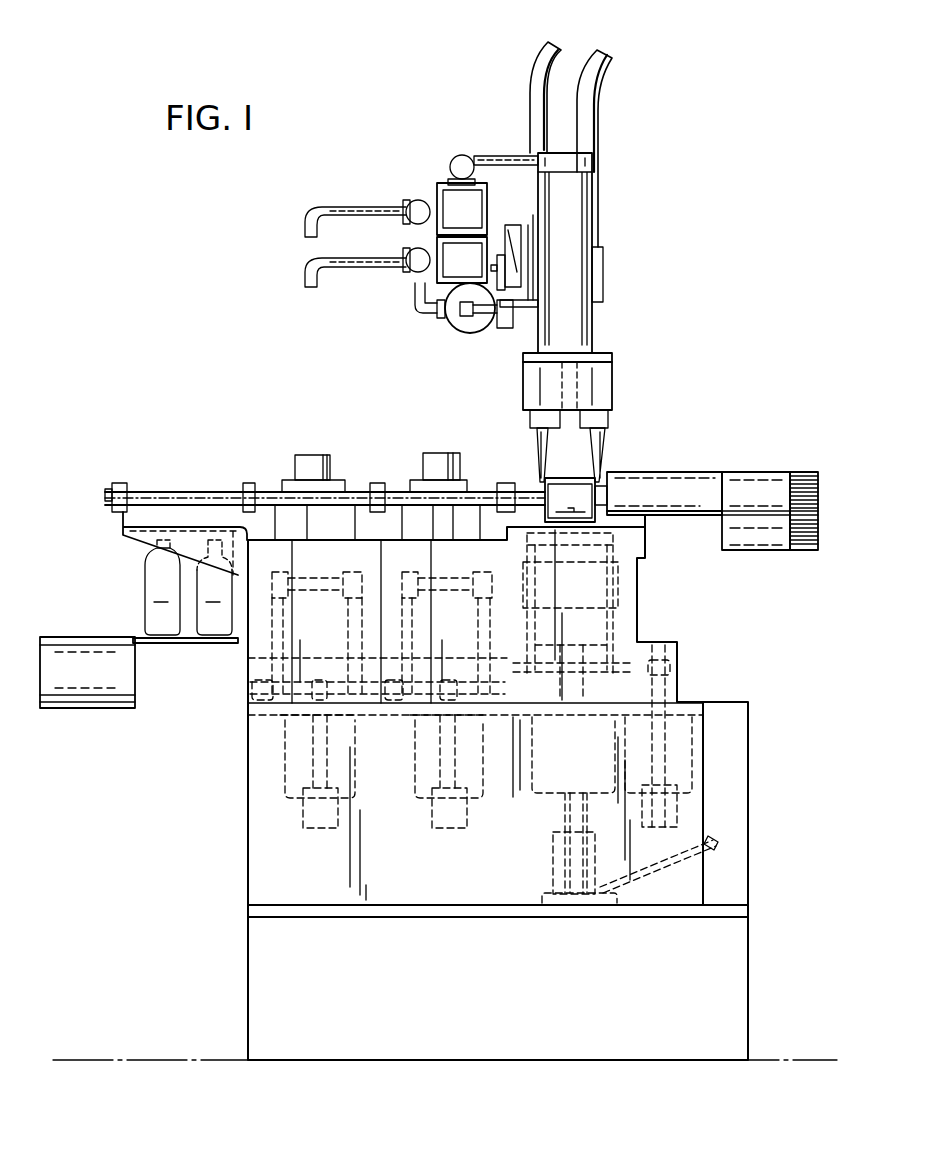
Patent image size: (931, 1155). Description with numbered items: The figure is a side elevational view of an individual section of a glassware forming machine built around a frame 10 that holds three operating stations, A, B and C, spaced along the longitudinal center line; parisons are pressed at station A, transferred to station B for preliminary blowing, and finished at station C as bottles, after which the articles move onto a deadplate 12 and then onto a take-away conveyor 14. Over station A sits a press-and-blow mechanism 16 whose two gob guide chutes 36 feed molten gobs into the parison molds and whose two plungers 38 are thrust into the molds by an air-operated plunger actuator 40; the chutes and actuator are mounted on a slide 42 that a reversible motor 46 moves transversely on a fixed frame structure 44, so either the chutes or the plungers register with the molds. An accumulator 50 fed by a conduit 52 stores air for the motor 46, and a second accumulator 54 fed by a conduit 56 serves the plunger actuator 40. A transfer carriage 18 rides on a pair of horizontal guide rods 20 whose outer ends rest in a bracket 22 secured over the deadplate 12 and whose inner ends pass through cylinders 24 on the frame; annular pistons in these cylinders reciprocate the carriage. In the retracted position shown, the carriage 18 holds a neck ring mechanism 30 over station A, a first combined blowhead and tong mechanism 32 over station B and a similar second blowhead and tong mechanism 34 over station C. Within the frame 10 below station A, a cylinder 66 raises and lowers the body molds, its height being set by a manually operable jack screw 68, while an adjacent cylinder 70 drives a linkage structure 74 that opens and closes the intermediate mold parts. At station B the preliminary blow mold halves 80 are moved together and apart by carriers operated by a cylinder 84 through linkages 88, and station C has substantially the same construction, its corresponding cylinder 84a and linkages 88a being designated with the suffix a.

The frame 10 is at (688, 702).
The deadplate 12 is at (175, 644).
The take-away conveyor 14 is at (98, 680).
The mechanism 16 is at (498, 148).
The carriage 18 is at (405, 420).
The guide rods 20 is at (152, 492).
The bracket 22 is at (134, 543).
The cylinders 24 is at (672, 504).
The neck ring mechanism 30 is at (566, 476).
The first combined blowhead and tong mechanism 32 is at (432, 443).
The second combined blowhead and tong mechanism 34 is at (283, 468).
The gob guide chutes 36 is at (612, 58).
The plungers 38 is at (540, 437).
The plunger actuator 40 is at (574, 220).
The slide 42 is at (603, 276).
The fixed frame structure 44 is at (512, 262).
The reversible motor 46 is at (472, 328).
The accumulator 50 is at (474, 270).
The conduit 52 is at (385, 270).
The accumulator 54 is at (474, 217).
The conduit 56 is at (393, 213).
The cylinder 66 is at (611, 810).
The jack screw 68 is at (545, 889).
The cylinder 70 is at (692, 789).
The linkage structure 74 is at (681, 772).
The blow mold halves 80 is at (745, 540).
The cylinder 84 is at (434, 782).
The cylinder 84a is at (307, 788).
The linkages 88 is at (440, 830).
The linkages 88a is at (311, 830).